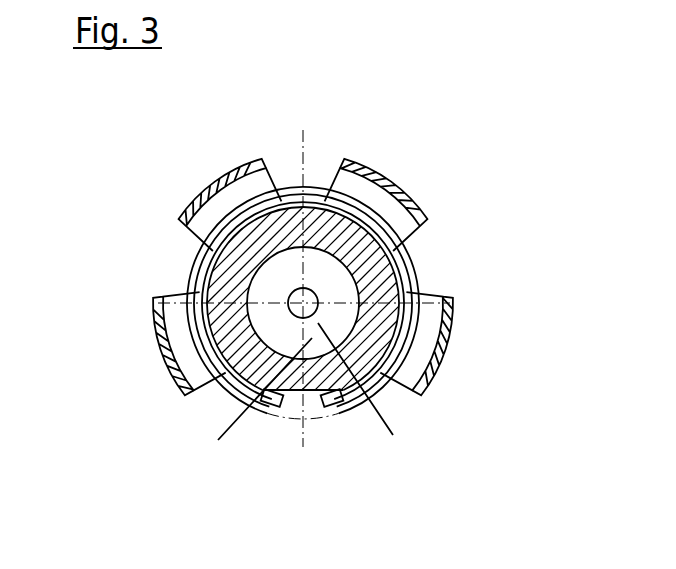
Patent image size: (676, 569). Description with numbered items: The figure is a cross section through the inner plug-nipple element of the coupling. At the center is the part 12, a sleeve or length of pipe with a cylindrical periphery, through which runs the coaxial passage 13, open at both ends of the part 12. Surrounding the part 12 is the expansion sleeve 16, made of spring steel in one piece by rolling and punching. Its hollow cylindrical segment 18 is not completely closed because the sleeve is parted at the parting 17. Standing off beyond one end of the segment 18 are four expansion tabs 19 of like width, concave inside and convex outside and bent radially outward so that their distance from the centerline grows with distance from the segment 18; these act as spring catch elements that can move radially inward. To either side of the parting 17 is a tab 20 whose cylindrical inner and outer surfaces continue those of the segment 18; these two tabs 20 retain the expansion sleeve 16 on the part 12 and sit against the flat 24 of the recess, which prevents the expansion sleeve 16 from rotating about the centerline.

The part 12 is at (365, 270).
The passage 13 is at (305, 288).
The expansion sleeve 16 is at (422, 150).
The parting 17 is at (317, 403).
The segment 18 is at (253, 383).
The expansion tabs 19 is at (225, 195).
The tabs 20 is at (267, 410).
The flat 24 is at (355, 365).